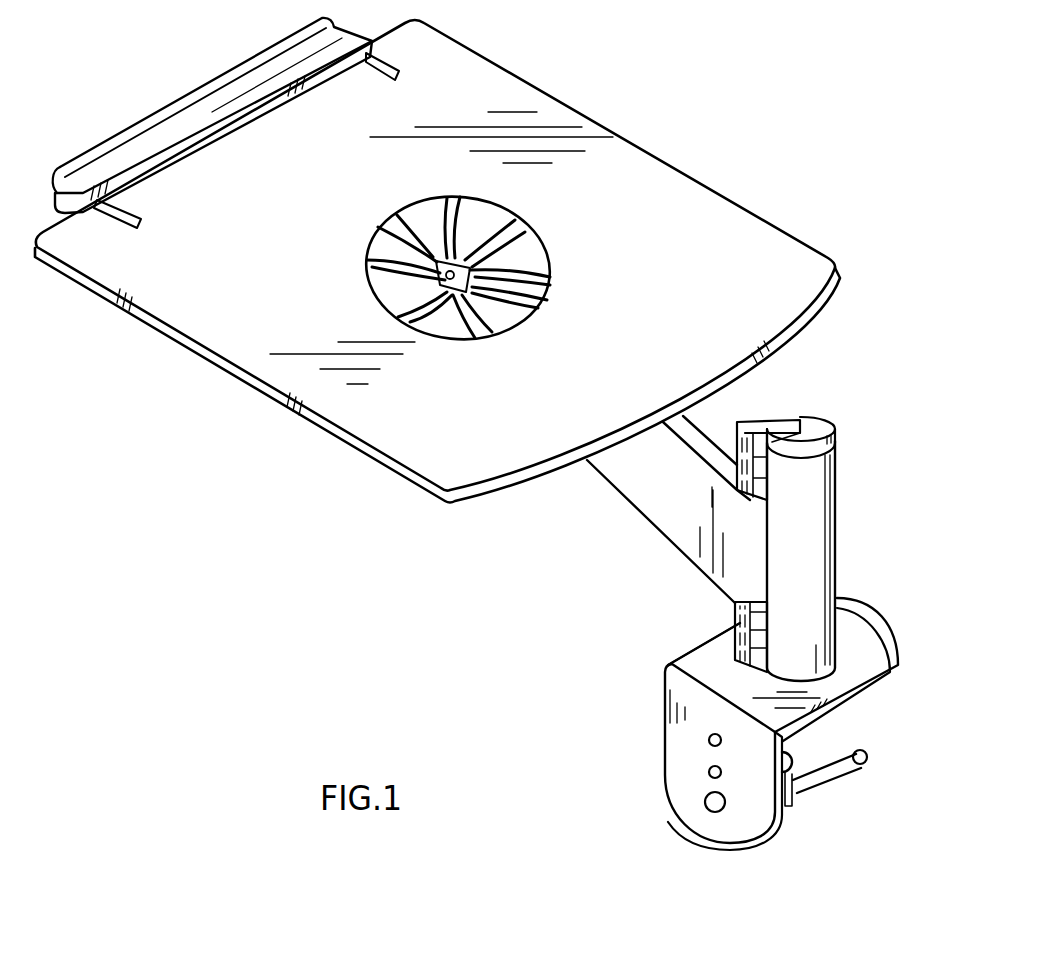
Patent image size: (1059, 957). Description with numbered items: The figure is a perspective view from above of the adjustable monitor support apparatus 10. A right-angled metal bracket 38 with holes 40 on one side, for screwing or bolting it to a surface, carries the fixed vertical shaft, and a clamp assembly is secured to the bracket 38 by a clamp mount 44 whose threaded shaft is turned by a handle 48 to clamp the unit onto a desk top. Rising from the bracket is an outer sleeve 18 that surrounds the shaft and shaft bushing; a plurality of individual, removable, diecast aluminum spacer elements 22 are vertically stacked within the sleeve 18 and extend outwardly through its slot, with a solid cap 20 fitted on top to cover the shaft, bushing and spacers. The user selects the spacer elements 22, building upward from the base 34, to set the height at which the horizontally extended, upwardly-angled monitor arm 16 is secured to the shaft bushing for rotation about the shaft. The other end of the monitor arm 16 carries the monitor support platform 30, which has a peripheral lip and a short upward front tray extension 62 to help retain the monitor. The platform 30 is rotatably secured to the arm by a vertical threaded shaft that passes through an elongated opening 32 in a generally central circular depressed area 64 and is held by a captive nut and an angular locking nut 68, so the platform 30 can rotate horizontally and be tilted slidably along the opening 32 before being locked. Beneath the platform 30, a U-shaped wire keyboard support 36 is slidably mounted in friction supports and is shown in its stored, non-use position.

The adjustable monitor support apparatus 10 is at (173, 55).
The monitor arm 16 is at (693, 497).
The outer sleeve 18 is at (821, 540).
The solid cap 20 is at (816, 424).
The spacer elements 22 is at (727, 441).
The monitor support platform 30 is at (698, 283).
The elongated opening 32 is at (534, 292).
The base 34 is at (735, 660).
The keyboard support 36 is at (106, 142).
The right-angled metal bracket 38 is at (848, 621).
The holes 40 is at (708, 773).
The clamp mount 44 is at (808, 774).
The handle 48 is at (847, 773).
The front tray extension 62 is at (362, 30).
The circular depressed area 64 is at (491, 238).
The angular locking nut 68 is at (456, 320).